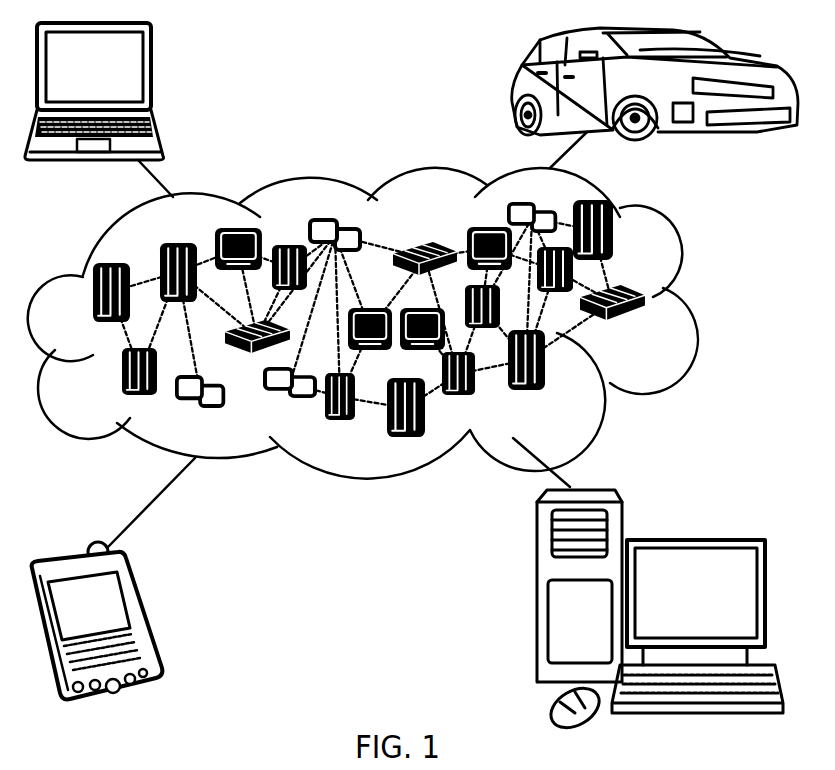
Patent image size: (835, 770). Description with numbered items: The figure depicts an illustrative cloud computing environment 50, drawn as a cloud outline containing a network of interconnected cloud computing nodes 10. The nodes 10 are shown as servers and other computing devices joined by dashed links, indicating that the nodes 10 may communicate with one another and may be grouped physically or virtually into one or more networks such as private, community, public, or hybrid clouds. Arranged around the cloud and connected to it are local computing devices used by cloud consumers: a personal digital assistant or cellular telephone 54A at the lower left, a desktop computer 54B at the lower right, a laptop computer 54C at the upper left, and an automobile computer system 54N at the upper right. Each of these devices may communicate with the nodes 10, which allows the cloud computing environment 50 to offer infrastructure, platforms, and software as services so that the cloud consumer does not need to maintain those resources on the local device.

The cloud computing nodes 10 is at (656, 331).
The cloud computing environment 50 is at (693, 300).
The personal digital assistant or cellular telephone 54A is at (143, 615).
The desktop computer 54B is at (693, 540).
The laptop computer 54C is at (154, 74).
The automobile computer system 54N is at (512, 90).